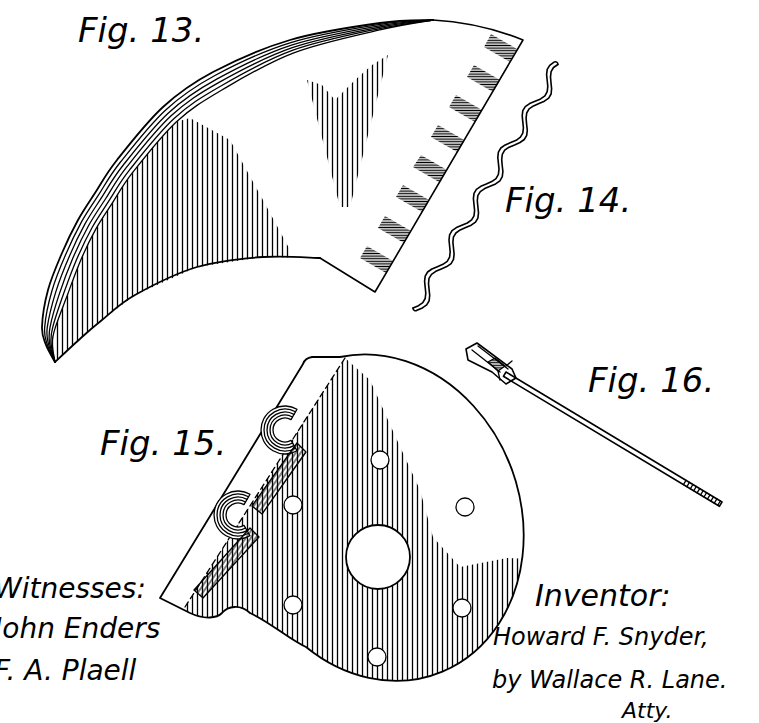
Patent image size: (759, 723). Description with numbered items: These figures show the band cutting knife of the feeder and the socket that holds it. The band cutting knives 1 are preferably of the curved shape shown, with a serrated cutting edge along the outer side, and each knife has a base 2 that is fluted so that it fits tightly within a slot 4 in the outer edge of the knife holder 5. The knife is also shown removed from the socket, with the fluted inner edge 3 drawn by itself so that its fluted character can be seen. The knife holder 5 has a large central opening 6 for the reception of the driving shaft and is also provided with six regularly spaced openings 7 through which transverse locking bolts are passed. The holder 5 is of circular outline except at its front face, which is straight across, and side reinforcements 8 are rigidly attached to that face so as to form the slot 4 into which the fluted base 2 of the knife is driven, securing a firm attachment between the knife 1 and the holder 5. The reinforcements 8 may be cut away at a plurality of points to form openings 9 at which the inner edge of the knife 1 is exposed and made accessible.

In FIG. 13, the band cutting knife 1 is at (280, 52).
In FIG. 13, the base 2 is at (512, 58).
In FIG. 14, the corrugated strip 3 is at (522, 138).
In FIG. 16, the slot 4 is at (475, 350).
In FIG. 15, the knife holder 5 is at (496, 470).
In FIG. 16, the knife holder 5 is at (688, 490).
In FIG. 15, the central opening 6 is at (378, 557).
In FIG. 15, the openings 7 is at (384, 462).
In FIG. 16, the side reinforcements 8 is at (496, 382).
In FIG. 15, the openings 9 is at (277, 418).